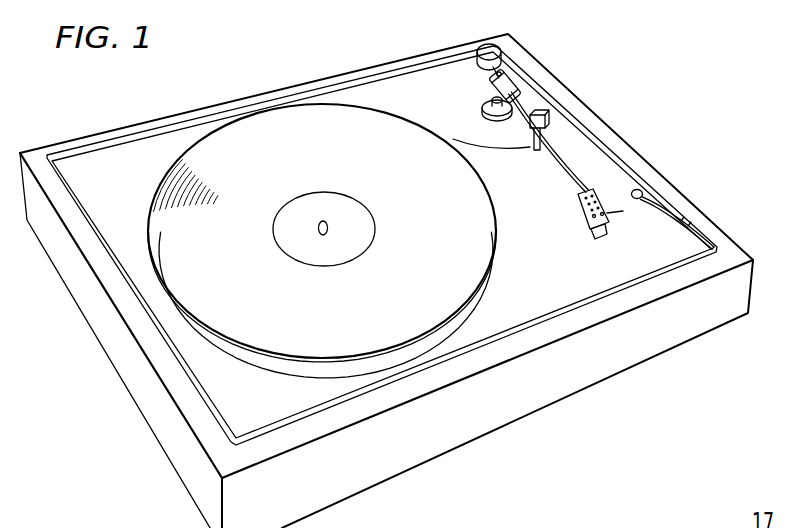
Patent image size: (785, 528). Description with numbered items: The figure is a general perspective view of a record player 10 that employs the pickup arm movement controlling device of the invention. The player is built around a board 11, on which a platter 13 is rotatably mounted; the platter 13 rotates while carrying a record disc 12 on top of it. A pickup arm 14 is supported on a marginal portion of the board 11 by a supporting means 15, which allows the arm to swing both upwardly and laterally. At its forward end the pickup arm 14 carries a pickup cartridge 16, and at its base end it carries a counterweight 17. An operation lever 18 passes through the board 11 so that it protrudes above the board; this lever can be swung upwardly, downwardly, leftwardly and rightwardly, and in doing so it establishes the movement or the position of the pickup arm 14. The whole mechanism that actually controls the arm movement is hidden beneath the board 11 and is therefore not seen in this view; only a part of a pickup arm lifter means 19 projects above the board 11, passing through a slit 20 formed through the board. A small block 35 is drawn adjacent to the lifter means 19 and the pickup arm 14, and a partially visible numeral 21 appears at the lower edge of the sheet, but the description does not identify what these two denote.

The record player 10 is at (108, 409).
The board 11 is at (625, 158).
The record disc 12 is at (166, 190).
The platter 13 is at (486, 283).
The pickup arm 14 is at (563, 156).
The supporting means 15 is at (476, 103).
The pickup cartridge 16 is at (582, 217).
The counterweight 17 is at (479, 64).
The operation lever 18 is at (685, 231).
The pickup arm lifter means 19 is at (553, 120).
The slit 20 is at (521, 152).
The partial numeral (cut off) 21 is at (539, 518).
The arm lift block 35 is at (543, 112).